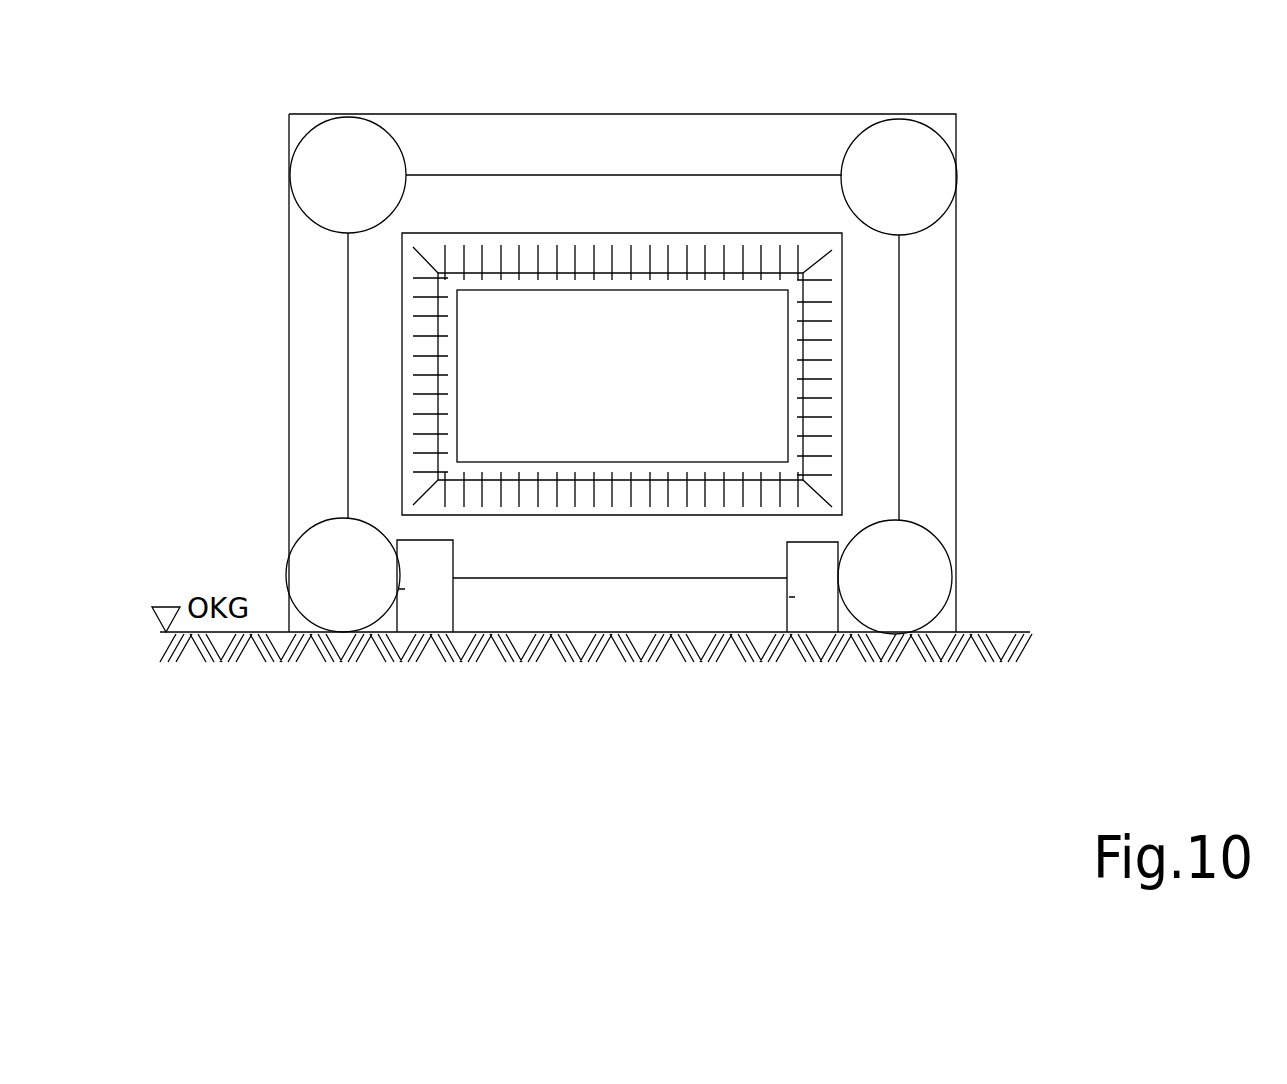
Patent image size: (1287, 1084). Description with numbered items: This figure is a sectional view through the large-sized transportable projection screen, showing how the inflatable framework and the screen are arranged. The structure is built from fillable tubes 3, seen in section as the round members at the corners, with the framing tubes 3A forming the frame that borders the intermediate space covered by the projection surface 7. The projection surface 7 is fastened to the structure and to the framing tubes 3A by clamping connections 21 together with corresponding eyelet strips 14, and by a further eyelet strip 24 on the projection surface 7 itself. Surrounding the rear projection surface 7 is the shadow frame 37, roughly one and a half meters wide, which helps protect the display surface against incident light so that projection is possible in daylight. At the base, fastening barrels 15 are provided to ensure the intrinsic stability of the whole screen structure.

The tubes 3 is at (347, 135).
The framing tubes 3A is at (818, 132).
The shadow frame 37 is at (717, 193).
The projection surface 7 is at (614, 391).
The eyelet strips 14 is at (648, 247).
The clamping connections 21 is at (708, 262).
The further eyelet strip 24 is at (772, 272).
The fastening barrels 15 is at (432, 557).